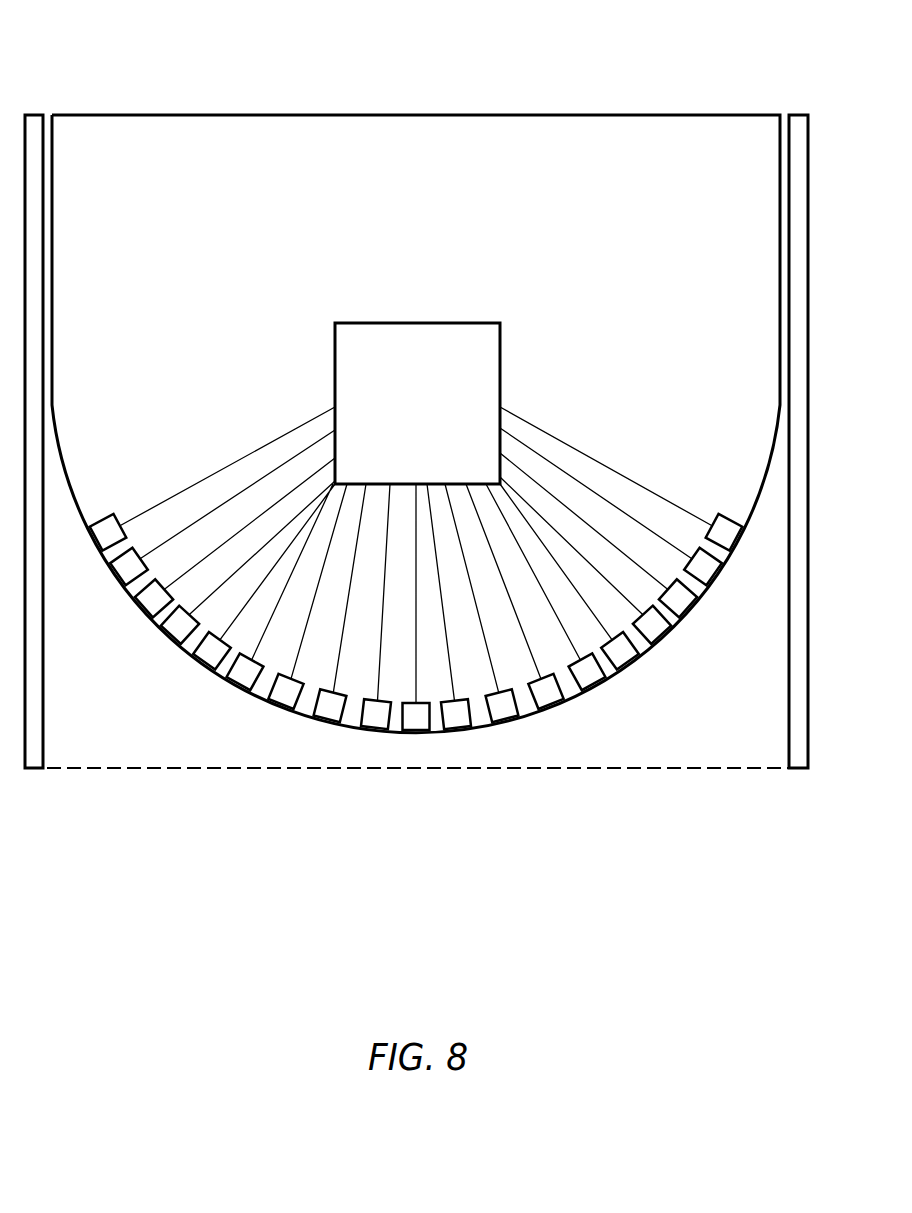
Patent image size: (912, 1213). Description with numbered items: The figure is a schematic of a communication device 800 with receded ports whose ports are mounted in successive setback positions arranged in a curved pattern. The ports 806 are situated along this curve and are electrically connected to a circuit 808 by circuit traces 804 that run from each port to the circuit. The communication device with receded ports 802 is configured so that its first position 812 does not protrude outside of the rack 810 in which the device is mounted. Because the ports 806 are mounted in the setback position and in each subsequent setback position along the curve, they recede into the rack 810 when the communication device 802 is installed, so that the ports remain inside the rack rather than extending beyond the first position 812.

The communication device 800 is at (129, 97).
The communication device with receded ports 802 is at (758, 148).
The circuit traces 804 is at (652, 488).
The ports 806 is at (662, 631).
The circuit 808 is at (439, 415).
The rack 810 is at (797, 768).
The first position 812 is at (417, 737).